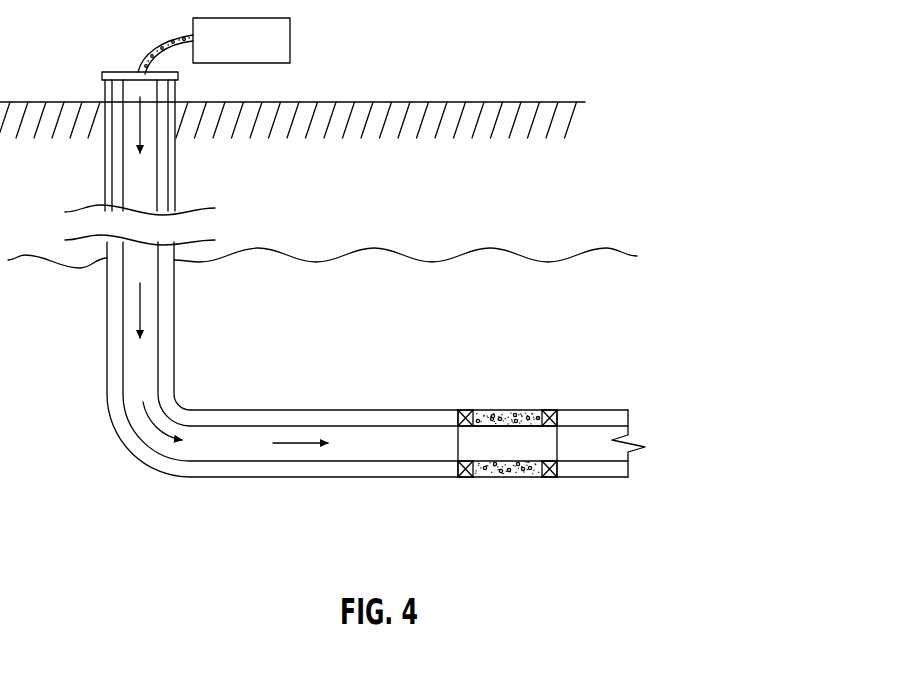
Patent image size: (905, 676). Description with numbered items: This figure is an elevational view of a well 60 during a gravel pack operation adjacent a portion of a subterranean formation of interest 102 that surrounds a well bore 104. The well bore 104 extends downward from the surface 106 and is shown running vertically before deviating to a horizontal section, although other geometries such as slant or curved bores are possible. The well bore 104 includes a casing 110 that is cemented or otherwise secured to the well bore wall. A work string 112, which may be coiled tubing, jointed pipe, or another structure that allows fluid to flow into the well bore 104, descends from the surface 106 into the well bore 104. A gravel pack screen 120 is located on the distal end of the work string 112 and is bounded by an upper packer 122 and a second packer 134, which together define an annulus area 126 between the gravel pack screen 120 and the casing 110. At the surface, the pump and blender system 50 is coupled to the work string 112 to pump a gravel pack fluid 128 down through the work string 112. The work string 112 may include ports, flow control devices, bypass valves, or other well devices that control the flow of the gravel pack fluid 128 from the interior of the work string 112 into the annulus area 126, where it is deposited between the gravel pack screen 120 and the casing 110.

The pump and blender system 50 is at (228, 54).
The well 60 is at (104, 487).
The subterranean formation of interest 102 is at (387, 289).
The well bore 104 is at (118, 170).
The surface 106 is at (440, 102).
The casing 110 is at (105, 200).
The work string 112 is at (122, 348).
The gravel pack screen 120 is at (519, 426).
The upper packer 122 is at (462, 410).
The annulus area 126 is at (513, 478).
The gravel pack fluid 128 is at (178, 37).
The packer 134 is at (548, 410).